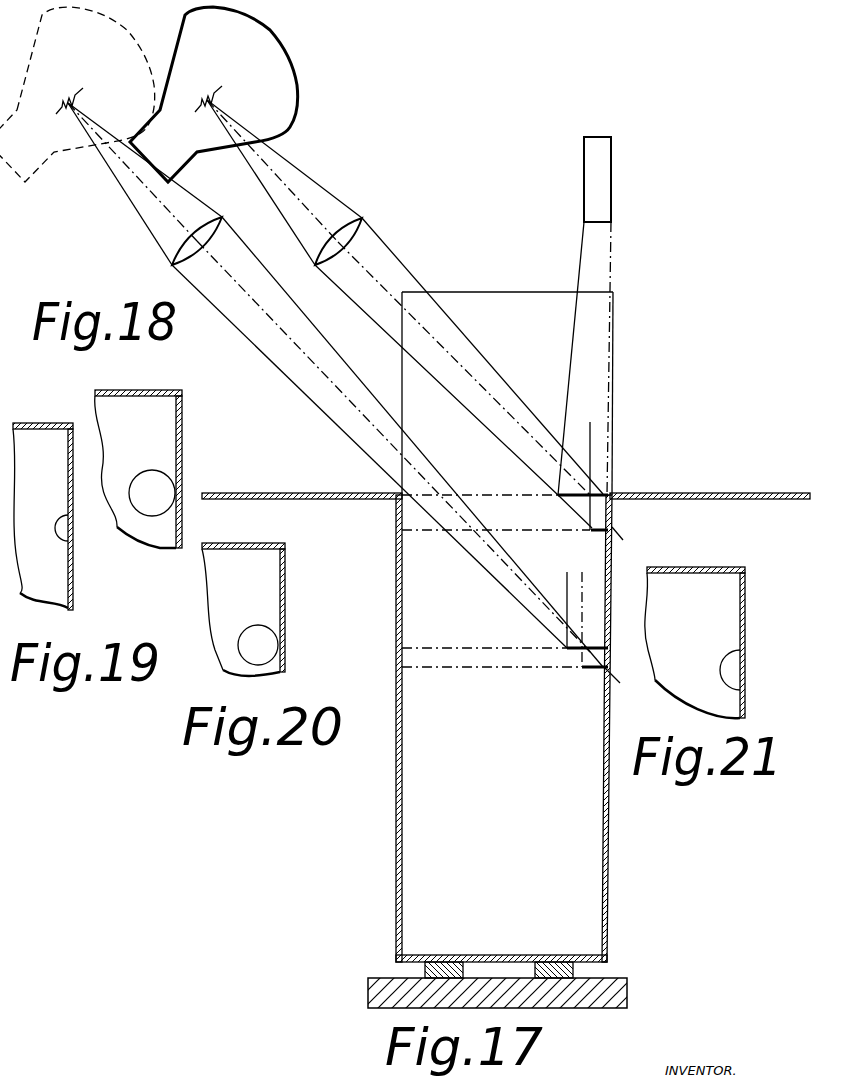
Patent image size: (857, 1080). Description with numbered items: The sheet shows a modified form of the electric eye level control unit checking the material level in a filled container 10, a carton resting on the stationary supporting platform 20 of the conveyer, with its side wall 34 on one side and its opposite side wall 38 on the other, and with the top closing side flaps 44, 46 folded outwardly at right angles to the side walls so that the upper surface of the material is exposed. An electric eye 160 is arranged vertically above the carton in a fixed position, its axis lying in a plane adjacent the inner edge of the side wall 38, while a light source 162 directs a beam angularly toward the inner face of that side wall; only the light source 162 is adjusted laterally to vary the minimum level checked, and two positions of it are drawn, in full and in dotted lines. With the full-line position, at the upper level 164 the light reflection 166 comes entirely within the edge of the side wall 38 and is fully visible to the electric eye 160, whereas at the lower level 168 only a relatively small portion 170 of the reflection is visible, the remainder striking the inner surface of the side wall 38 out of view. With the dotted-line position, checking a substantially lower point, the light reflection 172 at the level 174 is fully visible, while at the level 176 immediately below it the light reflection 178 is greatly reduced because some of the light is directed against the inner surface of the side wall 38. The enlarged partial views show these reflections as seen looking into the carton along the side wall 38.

In FIG. 17, the filled container 10 is at (500, 635).
In FIG. 18, the filled container 10 is at (159, 452).
In FIG. 19, the filled container 10 is at (64, 496).
In FIG. 20, the filled container 10 is at (264, 594).
In FIG. 21, the filled container 10 is at (715, 624).
In FIG. 17, the stationary supporting platform 20 is at (627, 998).
In FIG. 17, the side wall 34 is at (395, 818).
In FIG. 17, the side wall 38 is at (612, 552).
In FIG. 18, the side wall 38 is at (184, 438).
In FIG. 19, the side wall 38 is at (74, 573).
In FIG. 20, the side wall 38 is at (286, 602).
In FIG. 21, the side wall 38 is at (746, 617).
In FIG. 17, the side flap 44 is at (290, 493).
In FIG. 17, the side flap 46 is at (696, 493).
In FIG. 17, the electric eye 160 is at (612, 190).
In FIG. 17, the light source 162 is at (122, 27).
In FIG. 17, the level 164 is at (487, 494).
In FIG. 17, the light reflection 166 is at (567, 500).
In FIG. 18, the light reflection 166 is at (143, 470).
In FIG. 17, the lower level 168 is at (437, 532).
In FIG. 17, the portion of the reflection 170 is at (597, 532).
In FIG. 19, the portion of the reflection 170 is at (62, 510).
In FIG. 17, the light reflection 172 is at (572, 650).
In FIG. 20, the light reflection 172 is at (250, 629).
In FIG. 17, the level 174 is at (457, 647).
In FIG. 17, the level 176 is at (490, 669).
In FIG. 17, the light reflection 178 is at (593, 669).
In FIG. 21, the light reflection 178 is at (722, 660).